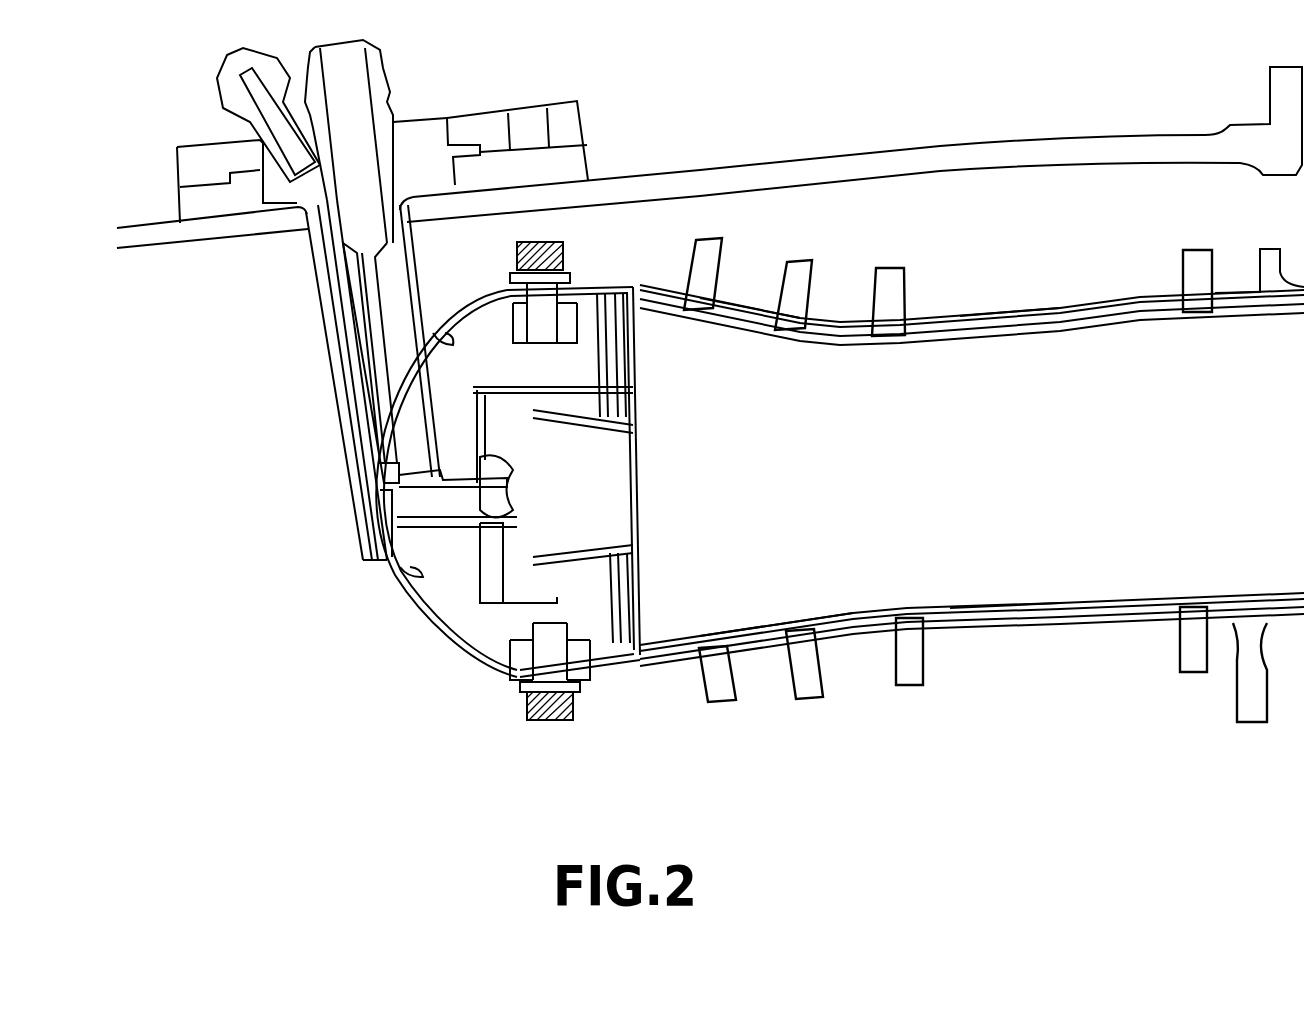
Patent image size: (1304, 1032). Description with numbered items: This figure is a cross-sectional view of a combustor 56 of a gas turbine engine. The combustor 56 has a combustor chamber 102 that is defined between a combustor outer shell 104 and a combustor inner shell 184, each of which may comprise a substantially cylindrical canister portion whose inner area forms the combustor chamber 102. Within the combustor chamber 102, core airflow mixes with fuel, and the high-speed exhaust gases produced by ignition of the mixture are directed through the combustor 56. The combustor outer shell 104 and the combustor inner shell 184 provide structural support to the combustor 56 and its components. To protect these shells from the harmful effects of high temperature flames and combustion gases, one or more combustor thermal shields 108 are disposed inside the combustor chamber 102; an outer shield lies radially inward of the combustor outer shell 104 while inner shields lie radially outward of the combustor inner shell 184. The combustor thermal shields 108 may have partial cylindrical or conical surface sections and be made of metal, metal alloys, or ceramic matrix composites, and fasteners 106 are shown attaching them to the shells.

The combustor 56 is at (1115, 198).
The combustor chamber 102 is at (1120, 454).
The combustor outer shell 104 is at (1073, 307).
The fastener studs 106 is at (727, 276).
The combustor thermal shield 108 is at (737, 327).
The combustor inner shell 184 is at (1047, 627).